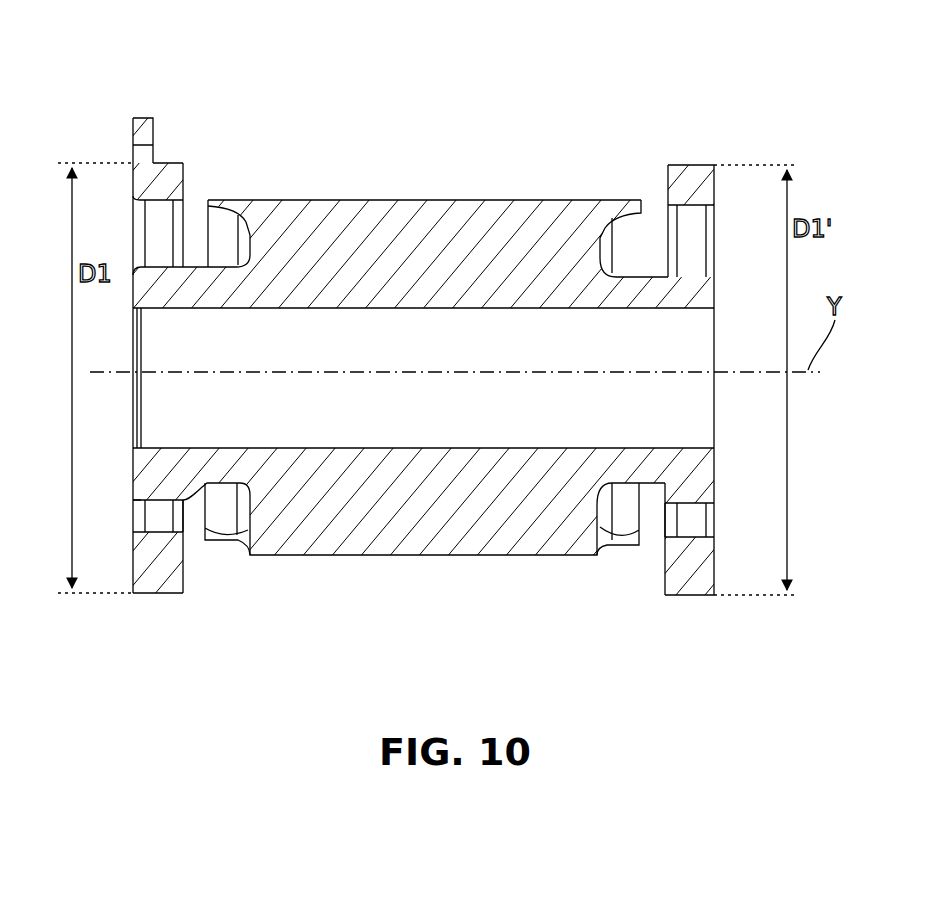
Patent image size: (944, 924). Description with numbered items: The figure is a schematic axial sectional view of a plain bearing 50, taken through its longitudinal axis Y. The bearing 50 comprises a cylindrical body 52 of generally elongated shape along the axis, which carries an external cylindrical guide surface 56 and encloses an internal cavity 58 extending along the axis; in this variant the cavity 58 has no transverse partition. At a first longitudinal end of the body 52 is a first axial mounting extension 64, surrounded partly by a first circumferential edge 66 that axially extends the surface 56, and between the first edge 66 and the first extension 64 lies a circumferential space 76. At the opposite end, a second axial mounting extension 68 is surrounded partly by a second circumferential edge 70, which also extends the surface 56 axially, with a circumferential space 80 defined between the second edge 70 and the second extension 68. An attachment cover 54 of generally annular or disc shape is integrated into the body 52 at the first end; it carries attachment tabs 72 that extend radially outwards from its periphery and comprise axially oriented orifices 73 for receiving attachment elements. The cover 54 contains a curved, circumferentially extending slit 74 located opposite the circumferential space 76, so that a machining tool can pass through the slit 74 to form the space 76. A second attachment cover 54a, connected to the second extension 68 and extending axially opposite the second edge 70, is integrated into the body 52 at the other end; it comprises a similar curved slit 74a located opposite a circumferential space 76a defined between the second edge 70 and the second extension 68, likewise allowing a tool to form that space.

The plain bearing 50 is at (748, 95).
The cylindrical body 52 is at (270, 192).
The attachment cover 54 is at (131, 596).
The attachment cover 54a is at (722, 162).
The external cylindrical guide surface 56 is at (410, 200).
The internal cavity 58 is at (310, 459).
The first axial mounting extension 64 is at (218, 458).
The first circumferential edge 66 is at (210, 200).
The second axial mounting extension 68 is at (632, 458).
The second circumferential edge 70 is at (620, 212).
The attachment tabs 72 is at (147, 130).
The orifices 73 is at (140, 155).
The slit 74 is at (148, 522).
The slit 74a is at (700, 525).
The circumferential space 76 is at (230, 248).
The circumferential space 76a is at (622, 515).
The circumferential space 80 is at (620, 240).